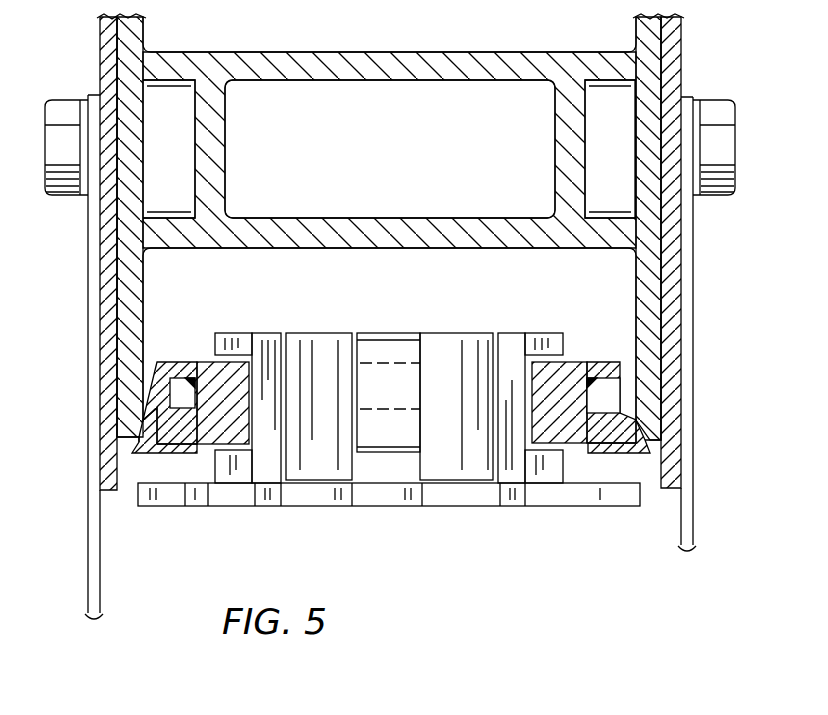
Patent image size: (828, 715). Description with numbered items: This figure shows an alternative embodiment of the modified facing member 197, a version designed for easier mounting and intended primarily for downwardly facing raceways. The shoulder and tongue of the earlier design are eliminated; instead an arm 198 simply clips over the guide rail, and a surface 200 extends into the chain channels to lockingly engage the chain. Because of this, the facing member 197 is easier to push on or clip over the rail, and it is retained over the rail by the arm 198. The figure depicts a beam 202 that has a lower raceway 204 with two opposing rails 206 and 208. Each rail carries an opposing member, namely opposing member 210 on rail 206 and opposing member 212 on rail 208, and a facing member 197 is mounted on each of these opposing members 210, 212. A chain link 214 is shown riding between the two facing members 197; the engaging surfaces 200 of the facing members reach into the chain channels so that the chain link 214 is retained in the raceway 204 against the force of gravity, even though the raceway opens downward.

The alternative embodiment of modified facing member 197 is at (213, 387).
The arm 198 is at (160, 375).
The surface 200 is at (232, 420).
The beam 202 is at (172, 229).
The lower raceway 204 is at (418, 300).
The rail 206 is at (160, 452).
The rail 208 is at (622, 440).
The opposing member 210 is at (185, 400).
The opposing member 212 is at (603, 412).
The chain link 214 is at (458, 417).